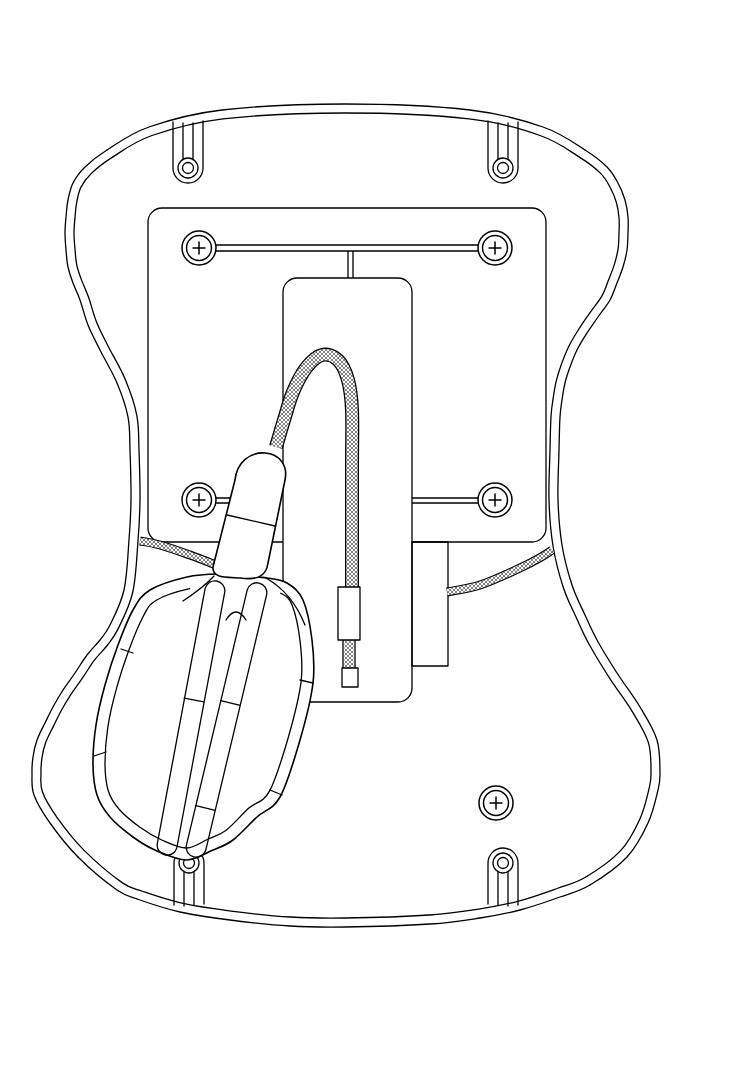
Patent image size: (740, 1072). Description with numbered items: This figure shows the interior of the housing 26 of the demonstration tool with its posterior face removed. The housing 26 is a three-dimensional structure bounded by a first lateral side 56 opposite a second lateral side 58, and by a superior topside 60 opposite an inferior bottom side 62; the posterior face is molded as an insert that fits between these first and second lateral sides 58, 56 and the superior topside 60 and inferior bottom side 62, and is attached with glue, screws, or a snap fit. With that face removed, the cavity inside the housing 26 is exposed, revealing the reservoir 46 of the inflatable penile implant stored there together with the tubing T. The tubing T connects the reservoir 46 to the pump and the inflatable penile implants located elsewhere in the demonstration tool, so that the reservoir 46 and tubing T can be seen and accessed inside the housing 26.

The housing 26 is at (346, 538).
The reservoir 46 is at (172, 709).
The first lateral side 56 is at (561, 490).
The second lateral side 58 is at (130, 502).
The superior topside 60 is at (358, 106).
The inferior bottom side 62 is at (359, 928).
The tubing T is at (360, 373).